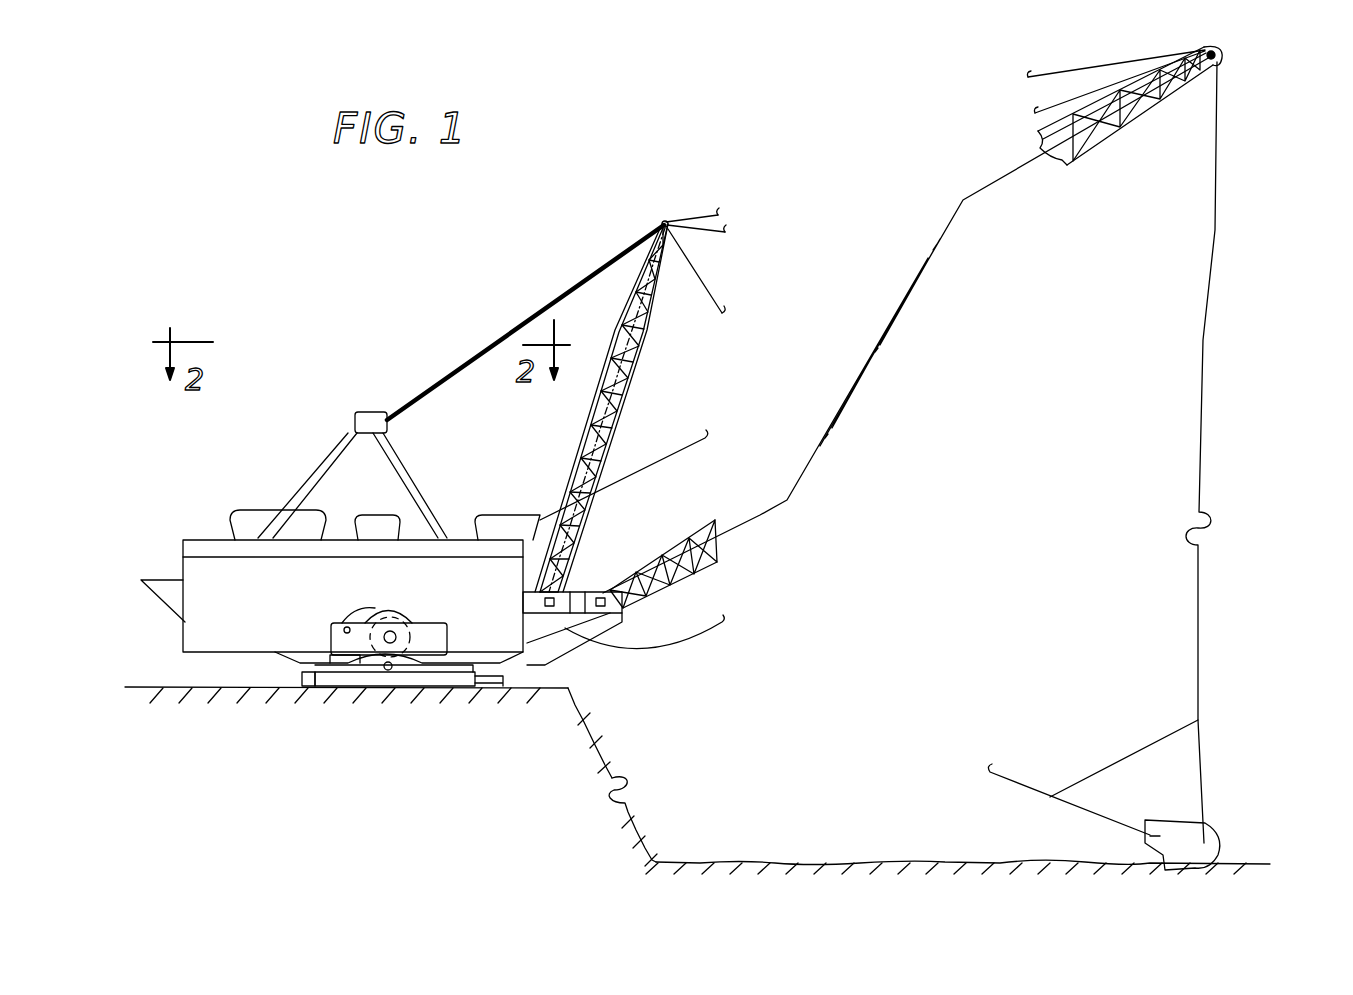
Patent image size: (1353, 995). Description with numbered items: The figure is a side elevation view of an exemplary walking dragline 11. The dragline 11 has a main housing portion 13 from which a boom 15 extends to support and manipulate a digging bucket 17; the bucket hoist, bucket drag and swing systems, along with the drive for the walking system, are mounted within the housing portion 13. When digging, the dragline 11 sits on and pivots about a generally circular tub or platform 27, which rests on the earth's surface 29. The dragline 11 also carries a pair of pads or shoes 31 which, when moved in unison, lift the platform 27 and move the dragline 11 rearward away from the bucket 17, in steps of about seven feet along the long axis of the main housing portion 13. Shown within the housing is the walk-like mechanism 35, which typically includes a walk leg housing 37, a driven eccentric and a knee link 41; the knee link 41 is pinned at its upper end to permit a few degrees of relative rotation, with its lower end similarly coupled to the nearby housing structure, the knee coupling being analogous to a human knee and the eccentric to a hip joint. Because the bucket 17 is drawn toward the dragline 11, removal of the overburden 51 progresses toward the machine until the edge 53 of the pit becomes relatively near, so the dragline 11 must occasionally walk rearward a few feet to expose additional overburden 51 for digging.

The walking dragline 11 is at (318, 418).
The main housing portion 13 is at (203, 573).
The boom 15 is at (688, 538).
The digging bucket 17 is at (1215, 828).
The tub or platform 27 is at (507, 682).
The earth's surface 29 is at (172, 687).
The pads or shoes 31 is at (317, 673).
The walk-like mechanism 35 is at (322, 604).
The walk leg housing 37 is at (330, 636).
The knee link 41 is at (357, 622).
The overburden 51 is at (603, 757).
The edge of the pit 53 is at (575, 697).